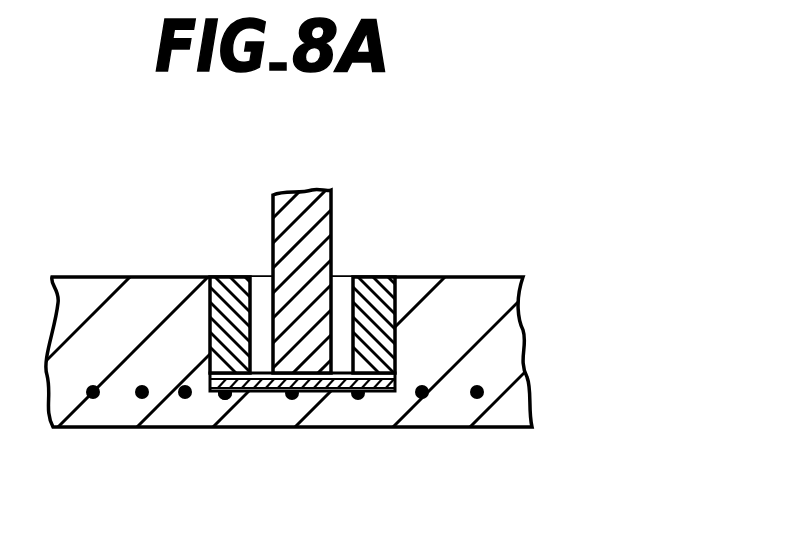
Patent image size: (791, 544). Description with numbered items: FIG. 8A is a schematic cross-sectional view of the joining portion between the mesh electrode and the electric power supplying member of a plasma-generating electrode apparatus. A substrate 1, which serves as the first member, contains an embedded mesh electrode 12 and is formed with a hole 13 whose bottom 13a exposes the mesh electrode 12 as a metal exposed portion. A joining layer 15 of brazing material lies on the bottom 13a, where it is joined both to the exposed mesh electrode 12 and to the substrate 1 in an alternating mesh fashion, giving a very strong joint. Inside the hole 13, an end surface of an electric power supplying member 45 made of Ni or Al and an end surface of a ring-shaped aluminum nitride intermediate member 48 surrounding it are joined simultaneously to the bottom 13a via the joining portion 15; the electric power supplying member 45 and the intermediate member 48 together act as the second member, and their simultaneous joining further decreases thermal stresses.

The substrate 1 is at (487, 355).
The mesh electrode 12 is at (422, 396).
The hole 13 is at (222, 293).
The bottom of the hole 13a is at (327, 396).
The joining layer 15 is at (243, 396).
The electric power supplying member 45 is at (313, 226).
The intermediate member 48 is at (377, 283).